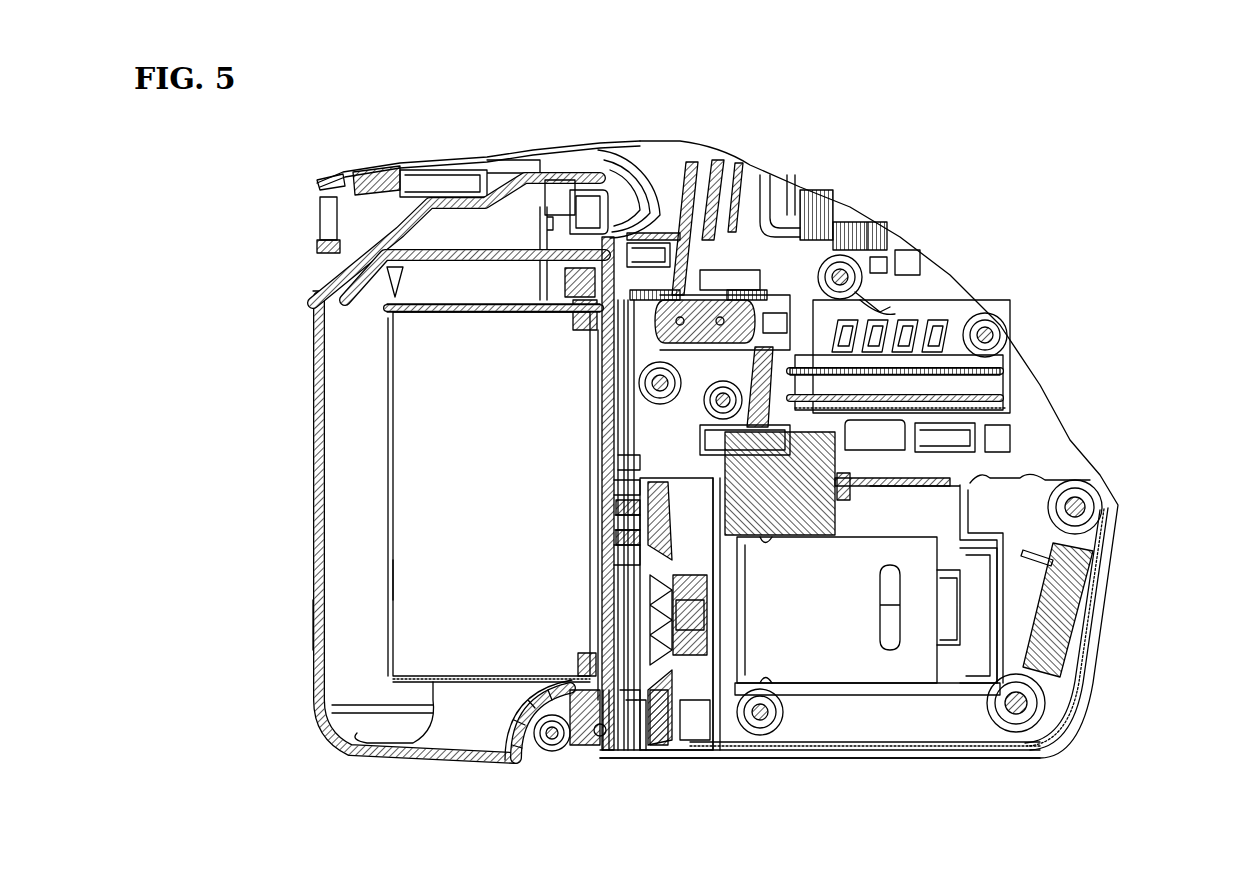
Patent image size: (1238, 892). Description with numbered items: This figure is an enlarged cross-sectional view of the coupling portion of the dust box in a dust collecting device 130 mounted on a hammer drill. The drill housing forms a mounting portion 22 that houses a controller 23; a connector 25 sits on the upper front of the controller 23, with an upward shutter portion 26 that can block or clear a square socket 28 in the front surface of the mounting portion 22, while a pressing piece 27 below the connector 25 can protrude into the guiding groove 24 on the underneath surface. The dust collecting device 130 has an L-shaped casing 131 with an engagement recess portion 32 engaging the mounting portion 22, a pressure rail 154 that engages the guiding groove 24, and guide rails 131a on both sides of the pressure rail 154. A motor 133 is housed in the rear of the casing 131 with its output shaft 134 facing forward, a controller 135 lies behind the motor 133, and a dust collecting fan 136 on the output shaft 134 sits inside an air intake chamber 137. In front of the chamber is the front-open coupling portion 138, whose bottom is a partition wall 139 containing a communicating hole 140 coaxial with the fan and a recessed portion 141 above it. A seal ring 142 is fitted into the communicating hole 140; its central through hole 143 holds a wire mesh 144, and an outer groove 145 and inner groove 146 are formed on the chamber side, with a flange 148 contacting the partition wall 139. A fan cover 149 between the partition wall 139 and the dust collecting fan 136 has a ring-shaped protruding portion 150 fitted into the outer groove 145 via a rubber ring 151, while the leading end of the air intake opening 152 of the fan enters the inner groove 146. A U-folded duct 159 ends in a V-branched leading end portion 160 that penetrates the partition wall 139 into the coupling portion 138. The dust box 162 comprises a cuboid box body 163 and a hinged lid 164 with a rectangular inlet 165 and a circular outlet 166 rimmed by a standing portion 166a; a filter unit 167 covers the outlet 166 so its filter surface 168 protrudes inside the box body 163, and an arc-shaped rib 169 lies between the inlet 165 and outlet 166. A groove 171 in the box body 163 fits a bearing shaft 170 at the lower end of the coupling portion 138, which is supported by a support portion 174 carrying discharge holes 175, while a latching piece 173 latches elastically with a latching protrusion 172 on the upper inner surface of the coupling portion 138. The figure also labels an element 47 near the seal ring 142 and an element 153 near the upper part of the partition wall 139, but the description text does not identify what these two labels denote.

The mounting portion 22 is at (740, 195).
The controller 23 is at (987, 383).
The guiding groove 24 is at (612, 408).
The connector 25 is at (770, 300).
The shutter portion 26 is at (760, 265).
The pressing piece 27 is at (862, 255).
The socket 28 is at (668, 180).
The engagement recess portion 32 is at (700, 200).
The seal member 47 is at (640, 520).
The dust collecting device 130 is at (288, 360).
The casing 131 is at (826, 760).
The guide rails 131a is at (1047, 440).
The motor 133 is at (840, 688).
The output shaft 134 is at (700, 752).
The controller 135 is at (1085, 585).
The dust collecting fan 136 is at (688, 750).
The air intake chamber 137 is at (715, 758).
The coupling portion 138 is at (384, 207).
The partition wall 139 is at (610, 395).
The communicating hole 140 is at (620, 490).
The recessed portion 141 is at (617, 445).
The seal ring 142 is at (640, 555).
The through hole 143 is at (625, 590).
The wire mesh 144 is at (618, 612).
The outer groove 145 is at (628, 750).
The inner groove 146 is at (646, 750).
The flange 148 is at (640, 750).
The cover 149 is at (666, 750).
The protruding portion 150 is at (630, 508).
The rubber ring 151 is at (640, 535).
The air intake opening 152 is at (620, 635).
The battery support 153 is at (600, 325).
The pressure rail 154 is at (900, 320).
The duct 159 is at (645, 175).
The leading end portion 160 is at (568, 185).
The dust box 162 is at (296, 551).
The box body 163 is at (313, 628).
The lid 164 is at (618, 385).
The inlet 165 is at (600, 190).
The outlet 166 is at (603, 598).
The standing portion 166a is at (598, 664).
The filter unit 167 is at (378, 584).
The filter surface 168 is at (393, 455).
The rib 169 is at (625, 465).
The bearing shaft 170 is at (553, 752).
The groove 171 is at (538, 762).
The latching protrusion 172 is at (340, 180).
The latching piece 173 is at (362, 178).
The support portion 174 is at (606, 750).
The discharge holes 175 is at (592, 748).